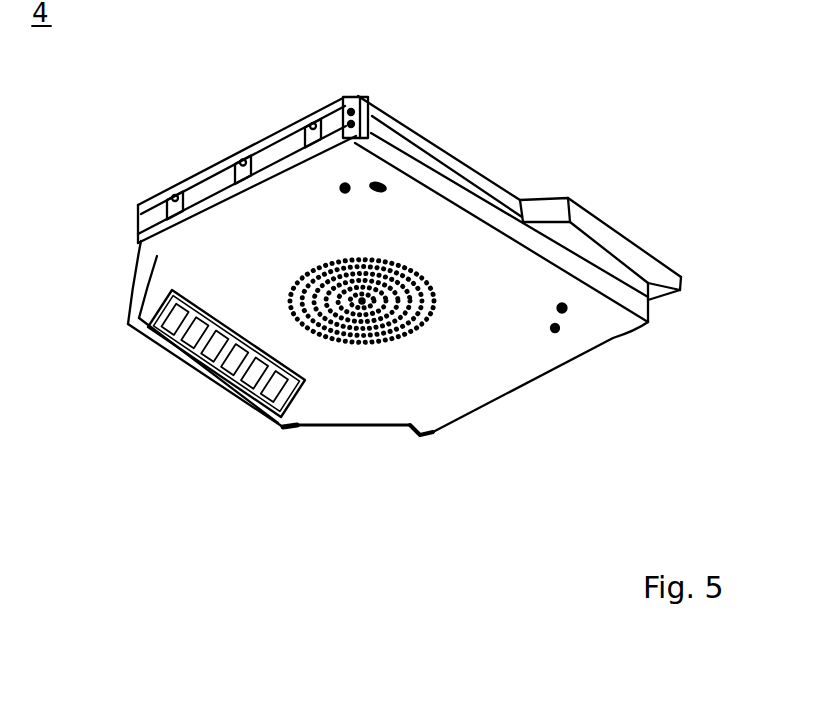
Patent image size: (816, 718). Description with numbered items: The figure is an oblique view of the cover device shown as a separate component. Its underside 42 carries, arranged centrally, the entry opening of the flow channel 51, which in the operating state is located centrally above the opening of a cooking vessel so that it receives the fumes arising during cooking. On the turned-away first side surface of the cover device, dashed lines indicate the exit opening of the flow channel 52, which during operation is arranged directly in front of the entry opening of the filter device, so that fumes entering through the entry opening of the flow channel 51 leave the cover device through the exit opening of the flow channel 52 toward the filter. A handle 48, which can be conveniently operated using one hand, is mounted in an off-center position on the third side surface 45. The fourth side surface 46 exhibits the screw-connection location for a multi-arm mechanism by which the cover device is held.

The underside 42 is at (480, 355).
The third side surface 45 is at (487, 187).
The fourth side surface 46 is at (277, 155).
The handle 48 is at (620, 248).
The entry opening of the flow channel 51 is at (407, 333).
The exit opening of the flow channel 52 is at (212, 363).